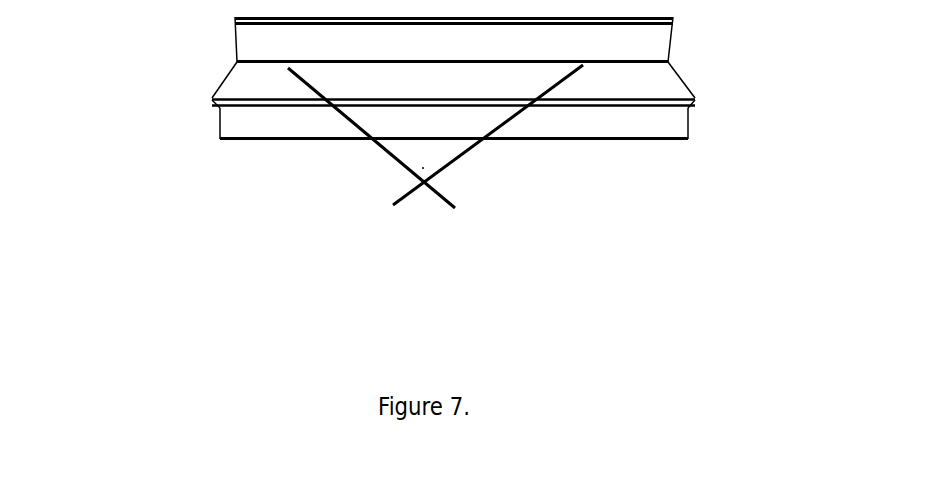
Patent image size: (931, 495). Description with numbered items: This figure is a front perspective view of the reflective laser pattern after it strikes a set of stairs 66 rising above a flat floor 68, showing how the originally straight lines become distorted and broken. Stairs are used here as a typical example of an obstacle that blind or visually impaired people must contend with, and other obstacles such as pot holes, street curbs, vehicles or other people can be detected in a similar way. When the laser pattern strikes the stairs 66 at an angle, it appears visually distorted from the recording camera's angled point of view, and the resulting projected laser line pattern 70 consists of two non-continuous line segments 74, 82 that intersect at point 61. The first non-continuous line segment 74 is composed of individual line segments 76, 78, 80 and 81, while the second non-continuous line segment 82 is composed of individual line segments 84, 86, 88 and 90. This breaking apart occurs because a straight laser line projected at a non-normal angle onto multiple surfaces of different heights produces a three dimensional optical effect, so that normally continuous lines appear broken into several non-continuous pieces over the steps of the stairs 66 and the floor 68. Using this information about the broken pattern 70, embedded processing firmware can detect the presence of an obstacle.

The intersection point 61 is at (423, 168).
The stairs 66 is at (390, 38).
The flat floor 68 is at (156, 245).
The projected laser line pattern 70 is at (423, 168).
The non-continuous line segment 74 is at (455, 202).
The individual line segment 76 is at (455, 200).
The individual line segment 78 is at (375, 126).
The individual line segment 80 is at (297, 78).
The individual line segment 81 is at (297, 78).
The non-continuous line segment 82 is at (423, 168).
The individual line segment 84 is at (410, 190).
The individual line segment 86 is at (453, 134).
The individual line segment 88 is at (558, 109).
The individual line segment 90 is at (560, 82).